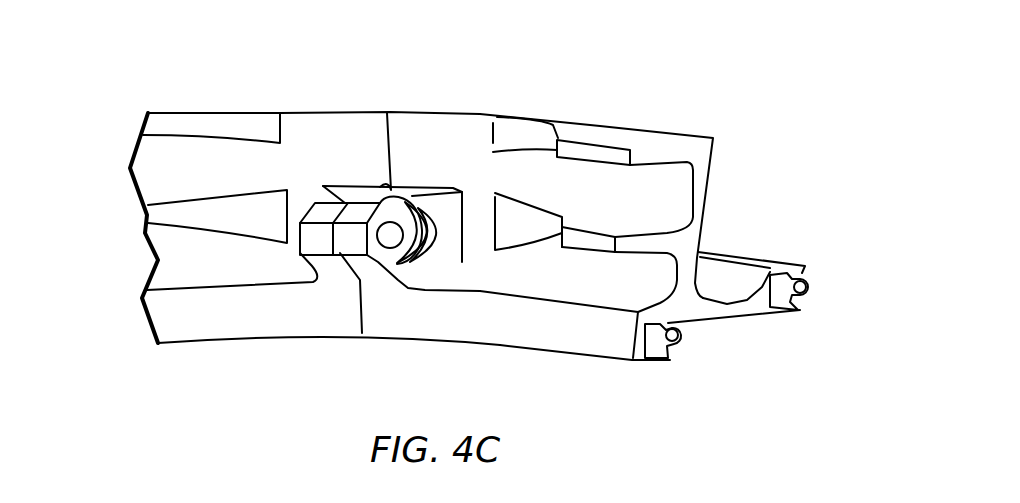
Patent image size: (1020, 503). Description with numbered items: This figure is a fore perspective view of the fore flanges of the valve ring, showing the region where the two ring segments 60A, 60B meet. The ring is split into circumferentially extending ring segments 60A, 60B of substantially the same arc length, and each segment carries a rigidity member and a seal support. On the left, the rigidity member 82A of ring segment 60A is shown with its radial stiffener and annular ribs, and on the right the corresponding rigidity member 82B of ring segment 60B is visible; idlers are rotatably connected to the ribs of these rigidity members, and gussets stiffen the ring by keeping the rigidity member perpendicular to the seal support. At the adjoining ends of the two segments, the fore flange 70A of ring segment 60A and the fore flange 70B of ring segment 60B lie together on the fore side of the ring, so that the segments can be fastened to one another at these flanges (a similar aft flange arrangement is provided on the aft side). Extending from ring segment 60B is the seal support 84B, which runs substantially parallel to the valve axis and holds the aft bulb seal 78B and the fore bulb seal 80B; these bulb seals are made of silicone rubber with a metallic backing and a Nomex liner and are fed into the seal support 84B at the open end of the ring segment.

The ring segment 60A is at (196, 100).
The ring segment 60B is at (642, 110).
The fore flange 70A is at (318, 213).
The fore flange 70B is at (410, 213).
The rigidity member 82A is at (155, 173).
The rigidity member 82B is at (660, 188).
The aft bulb seal 78B is at (815, 286).
The fore bulb seal 80B is at (684, 335).
The seal support 84B is at (753, 303).